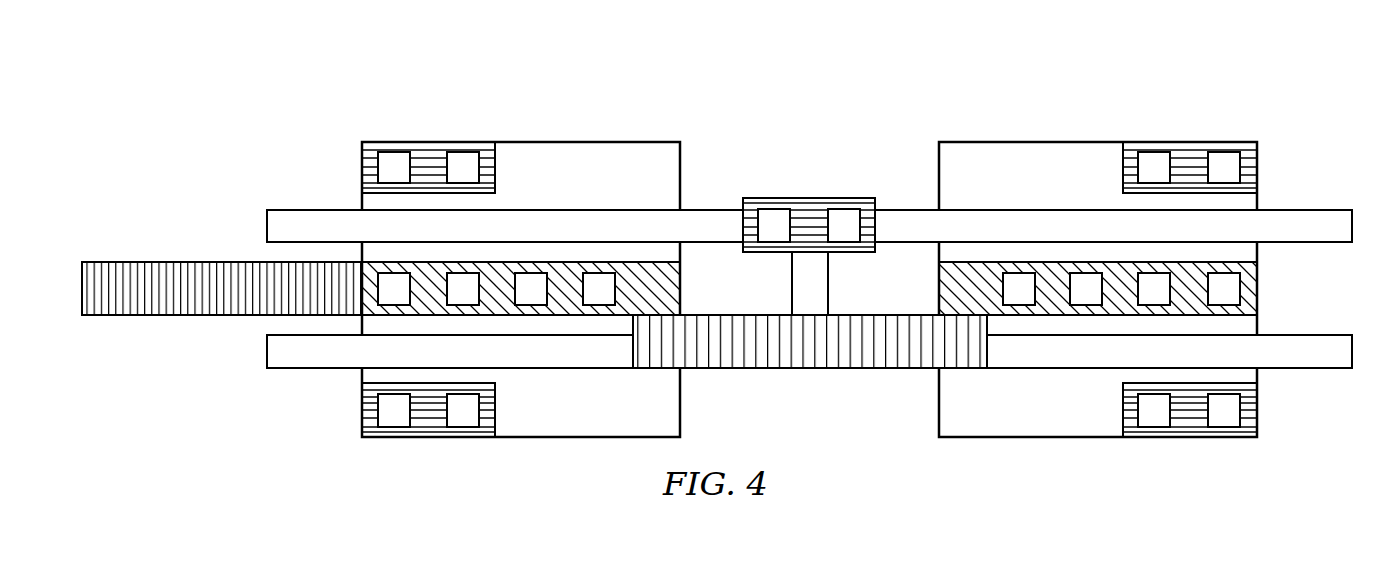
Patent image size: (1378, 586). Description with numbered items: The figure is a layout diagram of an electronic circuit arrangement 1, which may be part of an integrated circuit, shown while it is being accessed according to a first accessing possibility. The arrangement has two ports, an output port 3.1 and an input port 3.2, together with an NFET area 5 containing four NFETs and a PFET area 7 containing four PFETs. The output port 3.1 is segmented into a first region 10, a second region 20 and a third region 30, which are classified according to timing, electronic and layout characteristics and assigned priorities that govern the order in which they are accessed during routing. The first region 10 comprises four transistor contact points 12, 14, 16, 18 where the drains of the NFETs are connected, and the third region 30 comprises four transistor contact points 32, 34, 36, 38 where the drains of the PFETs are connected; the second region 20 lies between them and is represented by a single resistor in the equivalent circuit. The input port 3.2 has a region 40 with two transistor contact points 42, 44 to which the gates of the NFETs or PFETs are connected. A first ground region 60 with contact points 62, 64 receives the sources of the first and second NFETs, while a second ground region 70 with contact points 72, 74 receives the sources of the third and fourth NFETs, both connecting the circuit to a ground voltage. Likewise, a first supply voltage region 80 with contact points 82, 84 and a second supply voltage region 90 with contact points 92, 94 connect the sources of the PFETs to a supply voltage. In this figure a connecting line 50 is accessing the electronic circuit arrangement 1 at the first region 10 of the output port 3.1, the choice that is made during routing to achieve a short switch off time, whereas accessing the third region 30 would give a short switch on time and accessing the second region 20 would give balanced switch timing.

The electronic circuit arrangement 1 is at (226, 85).
The output port 3.1 is at (1290, 306).
The input port 3.2 is at (817, 158).
The NFET area 5 is at (505, 98).
The PFET area 7 is at (1112, 98).
The first region 10 is at (681, 278).
The transistor contact point 12 is at (403, 283).
The transistor contact point 14 is at (473, 283).
The transistor contact point 16 is at (531, 300).
The transistor contact point 18 is at (600, 280).
The second region 20 is at (757, 355).
The third region 30 is at (945, 282).
The transistor contact point 32 is at (1233, 287).
The transistor contact point 34 is at (1145, 293).
The transistor contact point 36 is at (1085, 282).
The transistor contact point 38 is at (1018, 275).
The region of the input port 40 is at (848, 255).
The transistor contact point 42 is at (775, 220).
The transistor contact point 44 is at (845, 220).
The connecting line 50 is at (185, 262).
The first ground region 60 is at (496, 166).
The transistor contact point 62 is at (397, 158).
The transistor contact point 64 is at (465, 158).
The second ground region 70 is at (370, 413).
The transistor contact point 72 is at (395, 420).
The transistor contact point 74 is at (463, 420).
The first supply voltage region 80 is at (1250, 162).
The transistor contact point 82 is at (1225, 158).
The transistor contact point 84 is at (1155, 158).
The second supply voltage region 90 is at (1123, 415).
The transistor contact point 92 is at (1225, 420).
The transistor contact point 94 is at (1155, 420).